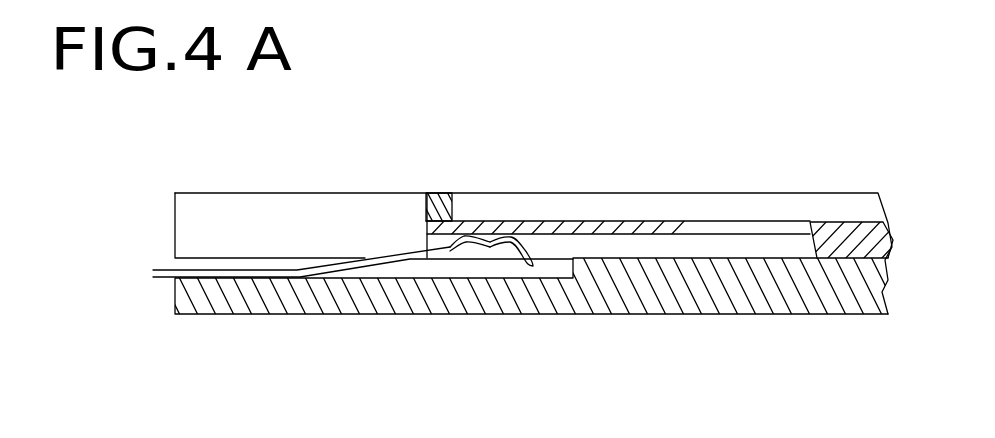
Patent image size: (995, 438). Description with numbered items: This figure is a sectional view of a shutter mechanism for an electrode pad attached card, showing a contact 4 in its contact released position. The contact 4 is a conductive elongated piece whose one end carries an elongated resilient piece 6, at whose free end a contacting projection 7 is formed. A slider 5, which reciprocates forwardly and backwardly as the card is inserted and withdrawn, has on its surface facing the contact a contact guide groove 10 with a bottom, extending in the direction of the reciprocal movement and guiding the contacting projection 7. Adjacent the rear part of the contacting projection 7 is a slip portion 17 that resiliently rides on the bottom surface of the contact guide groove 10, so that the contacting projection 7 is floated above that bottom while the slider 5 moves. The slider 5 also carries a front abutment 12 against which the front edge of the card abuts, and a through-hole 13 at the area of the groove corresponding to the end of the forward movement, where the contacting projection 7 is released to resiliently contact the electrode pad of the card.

The contact 4 is at (280, 270).
The front abutment 12 is at (436, 197).
The through-hole 13 is at (735, 227).
The slider 5 is at (846, 232).
The contact guide groove 10 is at (637, 256).
The elongated resilient piece 6 is at (410, 259).
The slip portion 17 is at (475, 240).
The contacting projection 7 is at (513, 231).